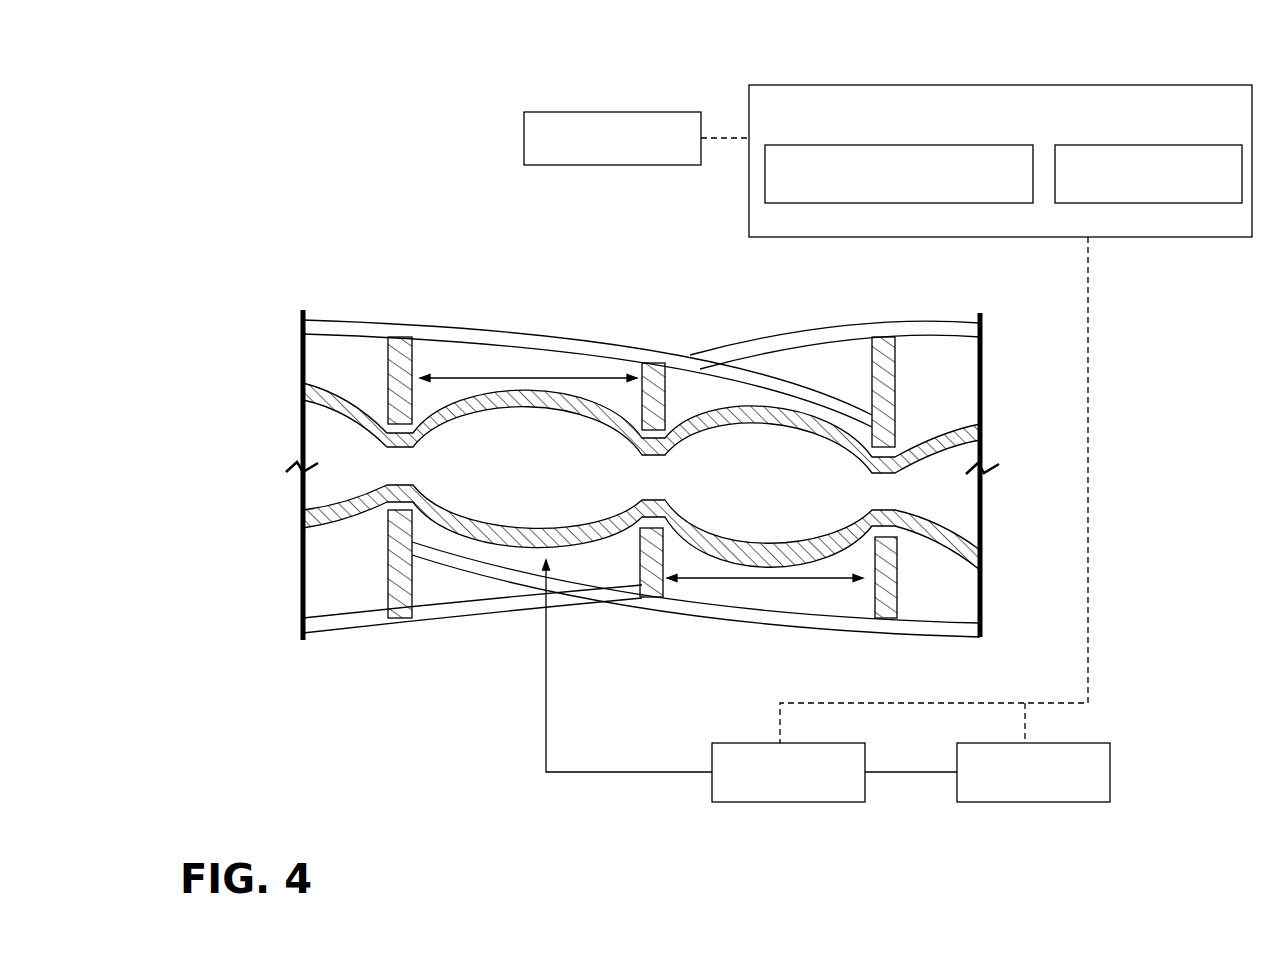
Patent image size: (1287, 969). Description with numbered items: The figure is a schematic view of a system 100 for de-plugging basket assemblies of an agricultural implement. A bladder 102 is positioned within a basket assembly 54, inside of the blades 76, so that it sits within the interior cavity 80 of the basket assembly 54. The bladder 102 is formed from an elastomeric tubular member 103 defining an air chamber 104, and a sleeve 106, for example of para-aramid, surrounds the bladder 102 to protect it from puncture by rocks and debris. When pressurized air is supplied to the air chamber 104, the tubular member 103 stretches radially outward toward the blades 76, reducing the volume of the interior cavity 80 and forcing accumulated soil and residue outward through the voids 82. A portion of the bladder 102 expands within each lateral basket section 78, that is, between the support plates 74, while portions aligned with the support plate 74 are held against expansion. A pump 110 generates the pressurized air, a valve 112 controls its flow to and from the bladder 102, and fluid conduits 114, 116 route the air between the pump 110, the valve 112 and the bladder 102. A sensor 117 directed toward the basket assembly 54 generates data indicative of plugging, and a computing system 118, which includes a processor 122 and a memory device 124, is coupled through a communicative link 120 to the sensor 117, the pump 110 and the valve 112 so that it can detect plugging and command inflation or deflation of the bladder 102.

The system 100 is at (272, 180).
The basket assembly 54 is at (451, 308).
The support plate 74 is at (392, 338).
The blades 76 is at (505, 332).
The lateral basket section 78 is at (547, 375).
The interior cavity 80 is at (337, 358).
The voids 82 is at (830, 362).
The bladder 102 is at (323, 415).
The elastomeric tubular member 103 is at (750, 434).
The air chamber 104 is at (504, 473).
The sleeve 106 is at (505, 558).
The pump 110 is at (1028, 803).
The valve 112 is at (785, 803).
The fluid conduit 114 is at (902, 773).
The fluid conduit 116 is at (543, 685).
The sensor 117 is at (607, 112).
The computing system 118 is at (815, 85).
The communicative link 120 is at (732, 148).
The processor 122 is at (877, 203).
The memory device 124 is at (1167, 203).